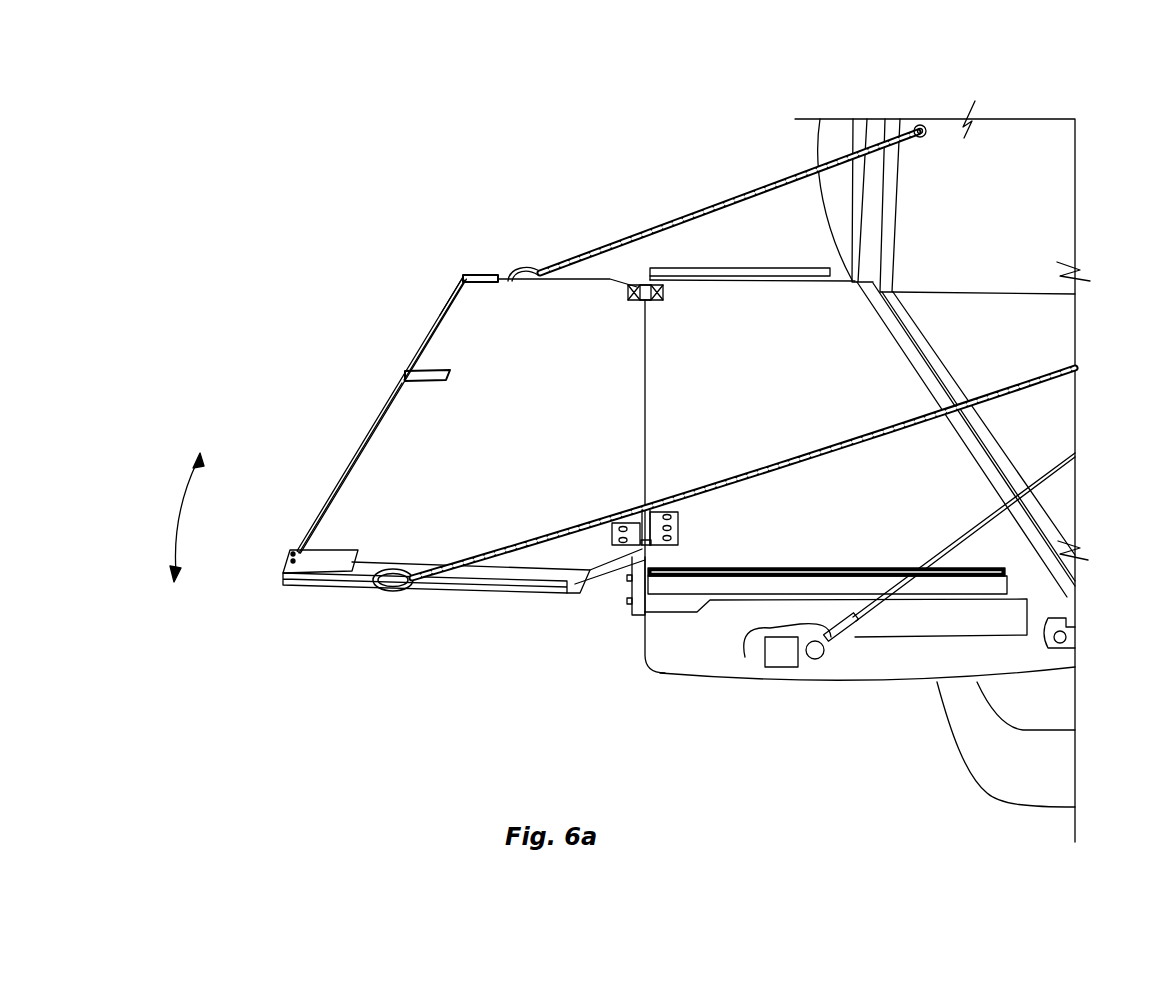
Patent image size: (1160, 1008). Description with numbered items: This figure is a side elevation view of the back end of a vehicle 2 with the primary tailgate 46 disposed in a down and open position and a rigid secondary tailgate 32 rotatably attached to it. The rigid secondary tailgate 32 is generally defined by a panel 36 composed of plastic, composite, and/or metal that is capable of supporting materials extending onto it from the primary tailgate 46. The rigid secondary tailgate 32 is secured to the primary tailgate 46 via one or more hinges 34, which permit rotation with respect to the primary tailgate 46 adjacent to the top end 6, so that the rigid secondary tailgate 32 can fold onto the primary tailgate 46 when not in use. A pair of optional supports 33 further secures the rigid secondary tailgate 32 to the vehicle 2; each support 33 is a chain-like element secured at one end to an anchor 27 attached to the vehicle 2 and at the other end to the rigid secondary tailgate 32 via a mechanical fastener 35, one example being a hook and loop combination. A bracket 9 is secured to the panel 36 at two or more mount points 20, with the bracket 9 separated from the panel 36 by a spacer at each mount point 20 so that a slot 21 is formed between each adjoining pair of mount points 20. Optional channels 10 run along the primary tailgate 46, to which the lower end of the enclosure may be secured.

The vehicle 2 is at (1000, 767).
The top end 6 is at (644, 633).
The bracket 9 is at (342, 477).
The channels 10 is at (733, 268).
The mount points 20 is at (468, 277).
The slot 21 is at (427, 338).
The anchor 27 is at (921, 125).
The rigid secondary tailgate 32 is at (500, 303).
The support 33 is at (634, 238).
The hinge 34 is at (652, 276).
The mechanical fastener 35 is at (402, 590).
The panel 36 is at (480, 353).
The primary tailgate 46 is at (1000, 650).